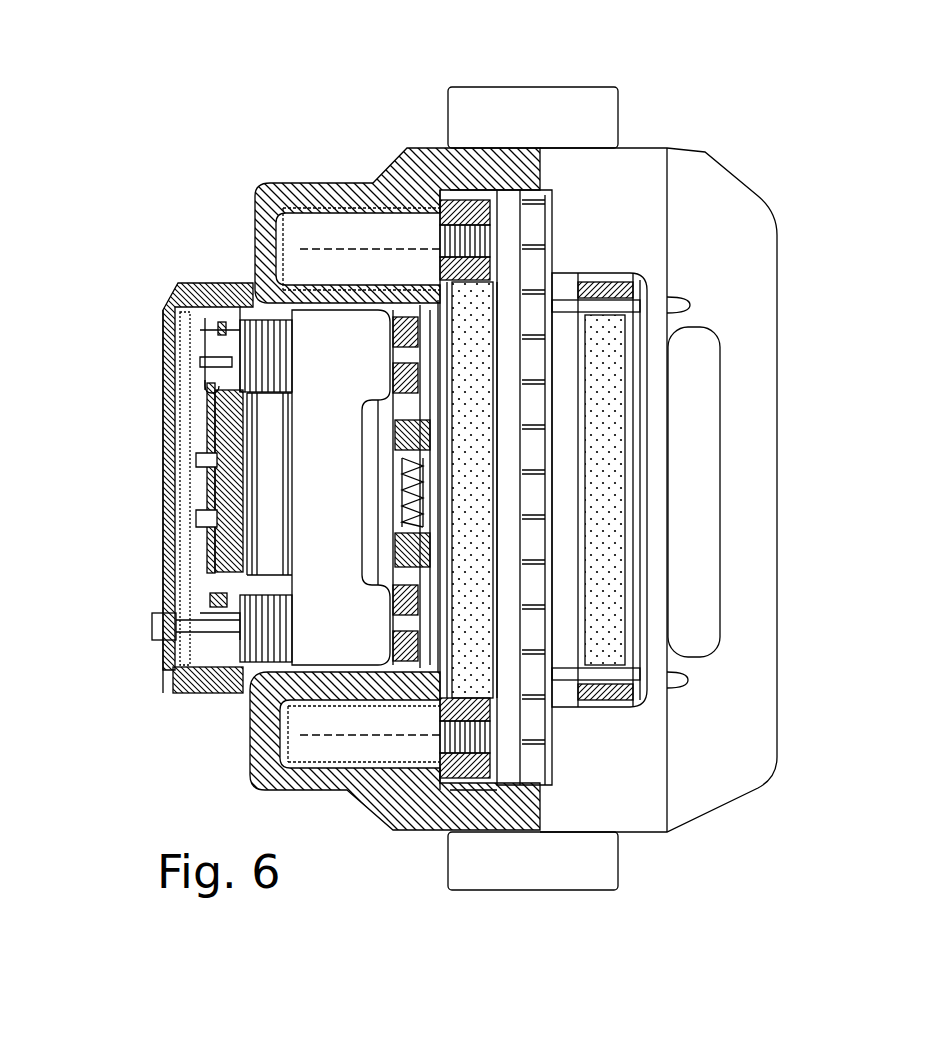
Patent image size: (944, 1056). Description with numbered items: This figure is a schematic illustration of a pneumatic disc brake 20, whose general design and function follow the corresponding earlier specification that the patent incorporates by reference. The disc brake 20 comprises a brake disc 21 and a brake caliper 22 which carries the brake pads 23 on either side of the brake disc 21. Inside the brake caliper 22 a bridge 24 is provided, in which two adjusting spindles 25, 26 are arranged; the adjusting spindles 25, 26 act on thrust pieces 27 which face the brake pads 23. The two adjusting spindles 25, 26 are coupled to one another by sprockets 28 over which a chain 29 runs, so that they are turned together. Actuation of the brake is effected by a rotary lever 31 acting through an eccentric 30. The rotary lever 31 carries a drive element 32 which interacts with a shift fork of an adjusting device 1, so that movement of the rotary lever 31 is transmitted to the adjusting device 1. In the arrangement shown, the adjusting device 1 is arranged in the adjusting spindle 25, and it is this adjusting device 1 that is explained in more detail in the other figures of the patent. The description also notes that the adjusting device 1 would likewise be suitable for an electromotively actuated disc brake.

The adjusting device 1 is at (222, 282).
The disc brake 20 is at (766, 59).
The brake disc 21 is at (512, 730).
The brake caliper 22 is at (380, 805).
The brake pads 23 is at (470, 310).
The bridge 24 is at (317, 320).
The adjusting spindle 25 is at (255, 322).
The adjusting spindle 26 is at (255, 663).
The thrust pieces 27 is at (422, 300).
The sprockets 28 is at (173, 668).
The chain 29 is at (165, 390).
The eccentric 30 is at (267, 550).
The rotary lever 31 is at (200, 512).
The drive element 32 is at (162, 425).